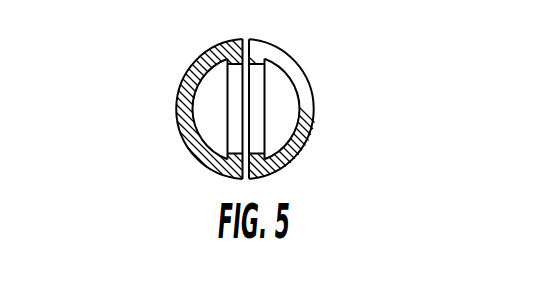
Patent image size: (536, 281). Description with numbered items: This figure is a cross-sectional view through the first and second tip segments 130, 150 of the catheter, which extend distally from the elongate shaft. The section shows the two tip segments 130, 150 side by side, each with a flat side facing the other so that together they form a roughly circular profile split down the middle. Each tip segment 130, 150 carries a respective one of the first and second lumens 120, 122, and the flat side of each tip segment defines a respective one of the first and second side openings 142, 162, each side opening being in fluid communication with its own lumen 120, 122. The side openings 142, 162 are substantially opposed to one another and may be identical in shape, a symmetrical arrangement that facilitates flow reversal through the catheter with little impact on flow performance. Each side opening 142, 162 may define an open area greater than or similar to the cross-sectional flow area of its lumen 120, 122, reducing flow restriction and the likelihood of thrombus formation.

The first lumen 120 is at (232, 92).
The second lumen 122 is at (278, 107).
The first tip segment 130 is at (147, 108).
The first side opening 142 is at (232, 117).
The second tip segment 150 is at (325, 89).
The second side opening 162 is at (258, 130).